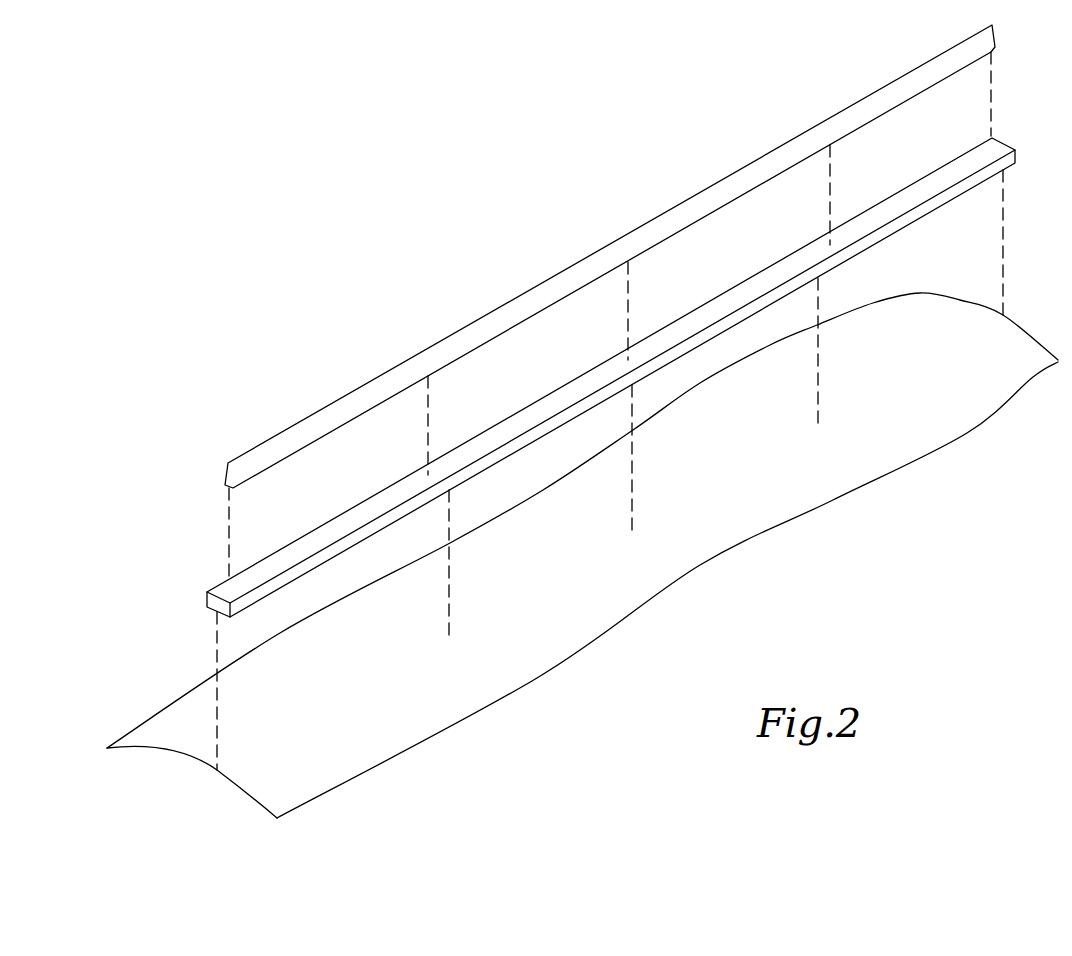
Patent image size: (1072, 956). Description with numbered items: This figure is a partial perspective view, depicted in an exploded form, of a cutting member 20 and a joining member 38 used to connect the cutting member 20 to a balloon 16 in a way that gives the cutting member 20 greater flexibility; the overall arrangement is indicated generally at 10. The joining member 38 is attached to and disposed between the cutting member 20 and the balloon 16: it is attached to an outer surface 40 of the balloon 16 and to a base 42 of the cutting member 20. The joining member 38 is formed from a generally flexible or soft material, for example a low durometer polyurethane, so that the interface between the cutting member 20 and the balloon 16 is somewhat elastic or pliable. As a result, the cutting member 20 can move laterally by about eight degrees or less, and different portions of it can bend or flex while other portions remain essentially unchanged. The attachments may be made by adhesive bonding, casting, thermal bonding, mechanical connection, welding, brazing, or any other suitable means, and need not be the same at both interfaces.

The tool assembly 10 is at (638, 177).
The balloon 16 is at (193, 735).
The cutting member 20 is at (305, 412).
The joining member 38 is at (218, 593).
The outer surface 40 is at (323, 697).
The base 42 is at (483, 343).